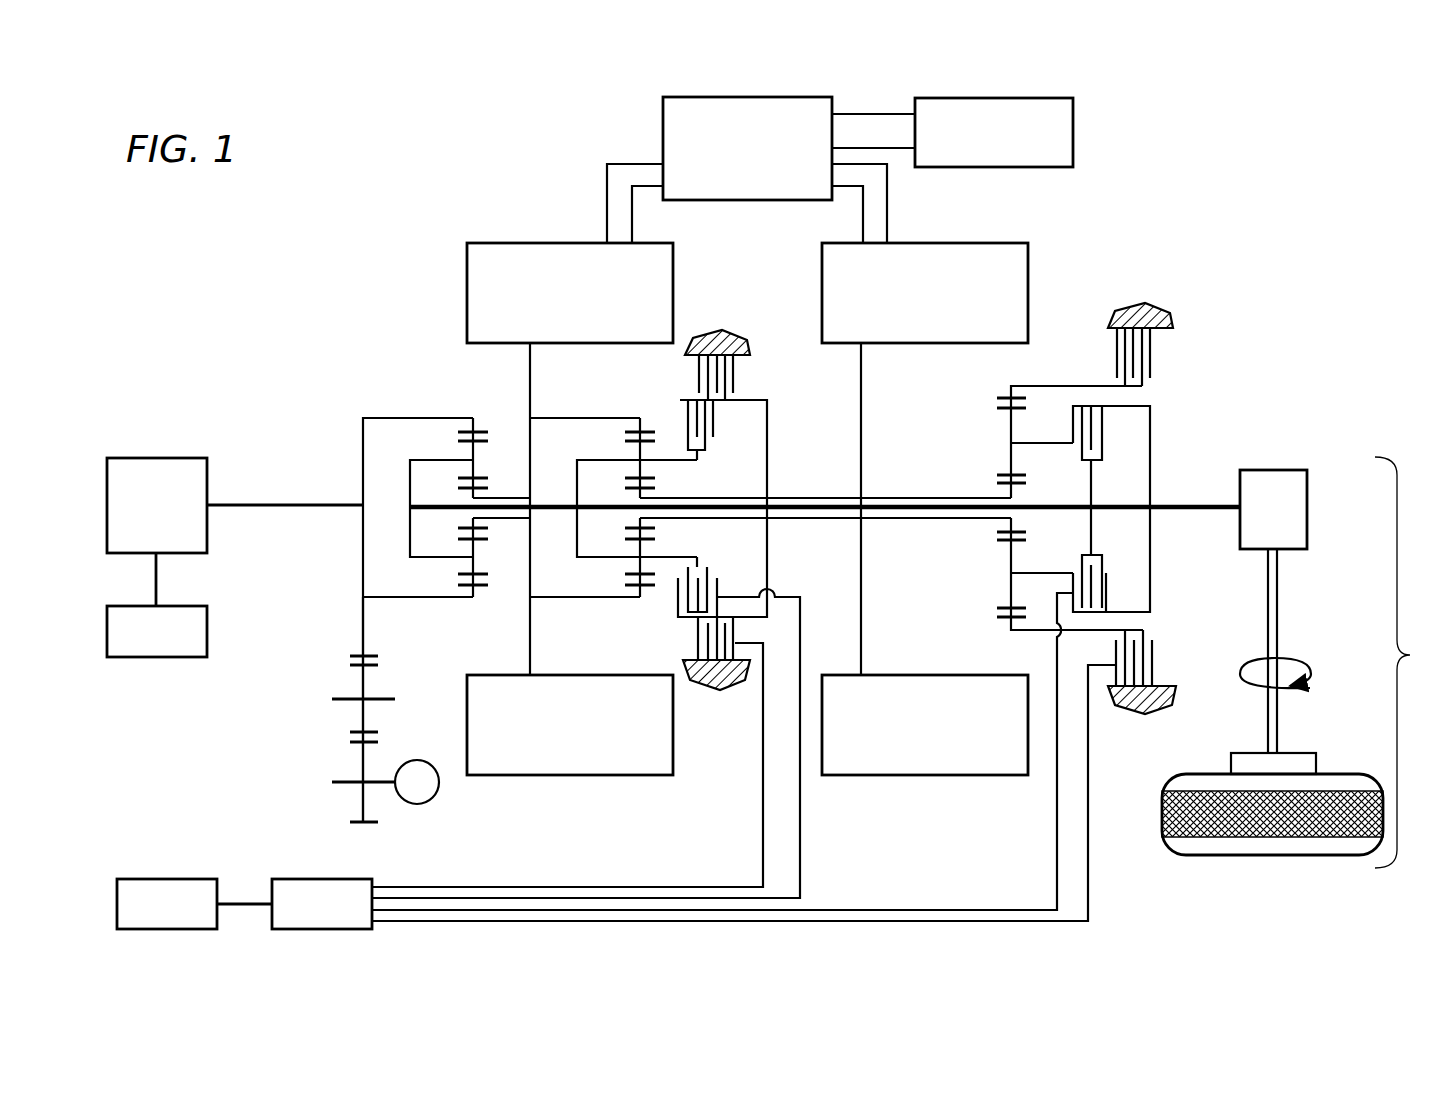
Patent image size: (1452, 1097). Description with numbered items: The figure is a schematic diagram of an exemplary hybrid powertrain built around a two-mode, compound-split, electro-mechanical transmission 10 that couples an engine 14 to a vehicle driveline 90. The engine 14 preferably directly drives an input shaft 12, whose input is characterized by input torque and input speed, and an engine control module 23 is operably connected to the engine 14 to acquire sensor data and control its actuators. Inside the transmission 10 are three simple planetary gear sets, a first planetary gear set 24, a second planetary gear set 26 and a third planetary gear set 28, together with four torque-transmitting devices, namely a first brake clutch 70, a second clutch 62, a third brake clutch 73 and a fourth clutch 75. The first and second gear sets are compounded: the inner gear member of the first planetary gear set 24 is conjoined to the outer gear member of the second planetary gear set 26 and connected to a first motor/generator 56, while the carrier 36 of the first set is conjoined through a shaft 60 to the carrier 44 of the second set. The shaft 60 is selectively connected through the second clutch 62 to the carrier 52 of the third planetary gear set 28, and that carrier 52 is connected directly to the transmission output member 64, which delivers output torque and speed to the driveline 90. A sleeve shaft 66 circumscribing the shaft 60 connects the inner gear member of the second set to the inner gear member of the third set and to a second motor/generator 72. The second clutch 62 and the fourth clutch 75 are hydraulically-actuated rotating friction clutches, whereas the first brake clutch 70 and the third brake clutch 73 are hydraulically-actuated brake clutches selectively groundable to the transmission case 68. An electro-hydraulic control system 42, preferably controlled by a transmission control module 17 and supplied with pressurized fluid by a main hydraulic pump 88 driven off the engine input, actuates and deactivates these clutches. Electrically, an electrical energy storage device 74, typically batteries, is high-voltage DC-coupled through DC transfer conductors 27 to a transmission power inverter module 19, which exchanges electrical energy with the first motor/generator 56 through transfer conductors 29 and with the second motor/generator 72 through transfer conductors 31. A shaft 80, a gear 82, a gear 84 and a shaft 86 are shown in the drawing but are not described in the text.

The transmission 10 is at (426, 203).
The input shaft 12 is at (320, 503).
The engine 14 is at (163, 457).
The transmission control module 17 is at (160, 878).
The transmission power inverter module 19 is at (662, 112).
The engine control module 23 is at (207, 650).
The first planetary gear set 24 is at (464, 408).
The second planetary gear set 26 is at (634, 408).
The DC transfer conductors 27 is at (848, 113).
The third planetary gear set 28 is at (1002, 387).
The transfer conductors 29 is at (606, 200).
The transfer conductors 31 is at (887, 196).
The carrier 36 is at (409, 533).
The electro-hydraulic control system 42 is at (292, 878).
The carrier 44 is at (576, 537).
The carrier 52 is at (1152, 412).
The motor/generator MG-A 56 is at (466, 276).
The shaft 60 is at (835, 505).
The clutch C2 62 is at (1112, 443).
The transmission output member 64 is at (1207, 505).
The sleeve shaft 66 is at (805, 496).
The transmission case 68 is at (718, 331).
The clutch C1 70 is at (1106, 352).
The motor/generator MG-B 72 is at (1029, 262).
The clutch C3 73 is at (742, 383).
The electrical energy storage device 74 is at (1074, 120).
The clutch C4 75 is at (716, 442).
The shaft 80 is at (362, 556).
The gear 82 is at (360, 690).
The gear 84 is at (360, 800).
The shaft 86 is at (382, 786).
The main hydraulic pump 88 is at (428, 804).
The driveline 90 is at (1412, 656).